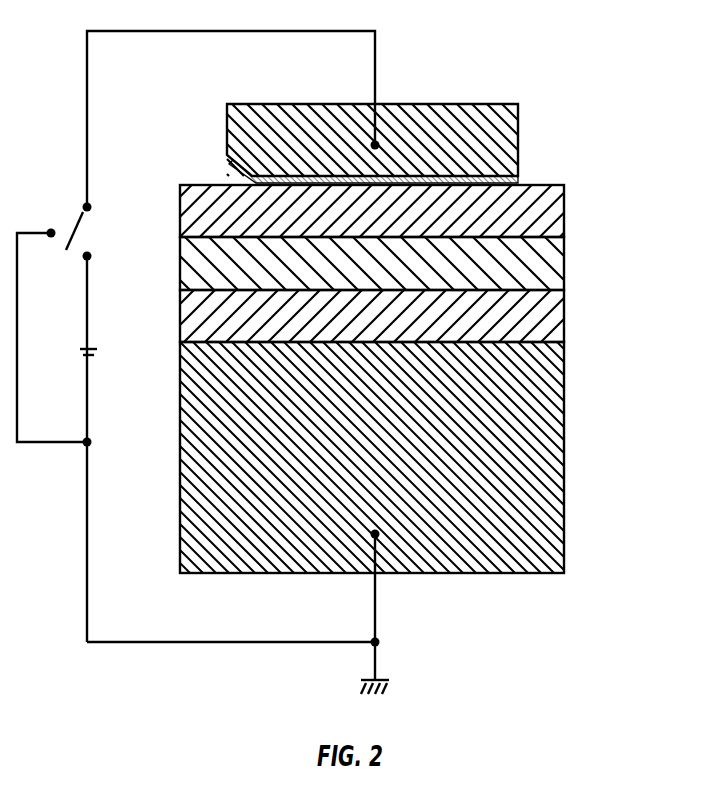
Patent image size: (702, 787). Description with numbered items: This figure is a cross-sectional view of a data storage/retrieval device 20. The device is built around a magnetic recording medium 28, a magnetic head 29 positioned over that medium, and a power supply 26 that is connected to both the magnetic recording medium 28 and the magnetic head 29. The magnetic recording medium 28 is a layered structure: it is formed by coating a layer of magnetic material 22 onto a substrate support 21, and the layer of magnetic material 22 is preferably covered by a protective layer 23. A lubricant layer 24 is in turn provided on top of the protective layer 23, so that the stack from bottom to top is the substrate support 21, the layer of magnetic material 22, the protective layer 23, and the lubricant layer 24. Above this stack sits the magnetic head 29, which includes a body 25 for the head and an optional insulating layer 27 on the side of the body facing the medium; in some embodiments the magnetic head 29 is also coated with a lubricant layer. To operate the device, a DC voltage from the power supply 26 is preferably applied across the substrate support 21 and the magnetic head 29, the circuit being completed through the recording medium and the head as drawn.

The data storage/retrieval device 20 is at (319, 354).
The substrate support 21 is at (400, 457).
The layer of magnetic material 22 is at (400, 316).
The protective layer 23 is at (400, 263).
The lubricant layer 24 is at (400, 211).
The body 25 is at (403, 137).
The power supply 26 is at (78, 356).
The insulating layer 27 is at (404, 166).
The magnetic recording medium 28 is at (367, 380).
The magnetic head 29 is at (381, 140).